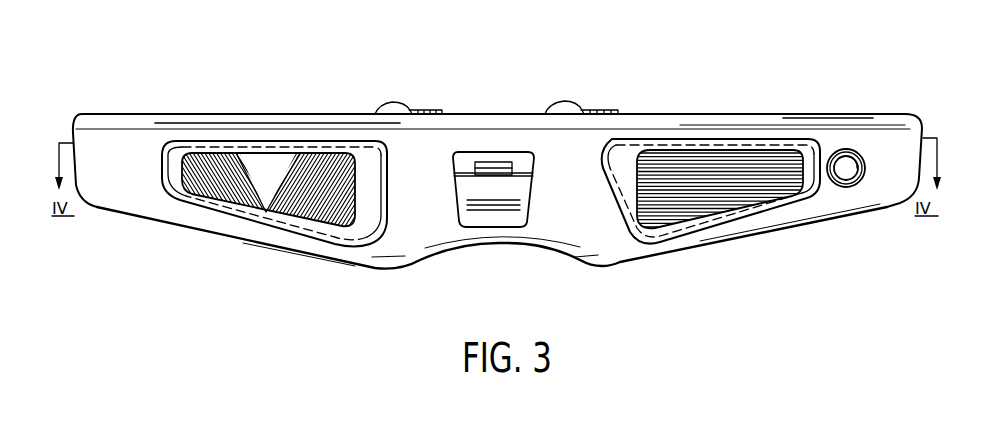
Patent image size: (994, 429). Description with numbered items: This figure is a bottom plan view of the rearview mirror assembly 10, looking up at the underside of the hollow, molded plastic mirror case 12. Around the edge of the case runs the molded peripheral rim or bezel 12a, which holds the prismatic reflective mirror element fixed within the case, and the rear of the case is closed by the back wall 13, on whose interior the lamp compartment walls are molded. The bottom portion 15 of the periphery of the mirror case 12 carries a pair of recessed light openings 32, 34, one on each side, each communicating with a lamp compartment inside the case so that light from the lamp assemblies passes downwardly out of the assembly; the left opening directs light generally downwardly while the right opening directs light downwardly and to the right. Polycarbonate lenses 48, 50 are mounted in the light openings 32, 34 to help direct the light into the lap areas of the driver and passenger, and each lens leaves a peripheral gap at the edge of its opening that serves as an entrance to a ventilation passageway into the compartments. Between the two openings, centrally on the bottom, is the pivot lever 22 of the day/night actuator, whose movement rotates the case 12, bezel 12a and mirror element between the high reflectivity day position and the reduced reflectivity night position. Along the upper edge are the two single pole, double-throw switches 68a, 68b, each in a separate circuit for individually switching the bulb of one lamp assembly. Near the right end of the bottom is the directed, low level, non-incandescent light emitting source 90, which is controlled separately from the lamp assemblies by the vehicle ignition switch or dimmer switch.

The rearview mirror assembly 10 is at (691, 82).
The mirror case 12 is at (158, 205).
The peripheral rim or bezel 12a is at (740, 118).
The back wall of mirror case 13 is at (390, 273).
The bottom portion of the periphery of mirror case 15 is at (428, 191).
The pivot lever 22 is at (525, 211).
The light opening 32 is at (233, 148).
The light opening 34 is at (793, 143).
The lens 48 is at (267, 170).
The lens 50 is at (672, 178).
The single pole, double-throw switch 68a is at (388, 110).
The single pole, double-throw switch 68b is at (565, 107).
The low level light emitting source 90 is at (862, 190).